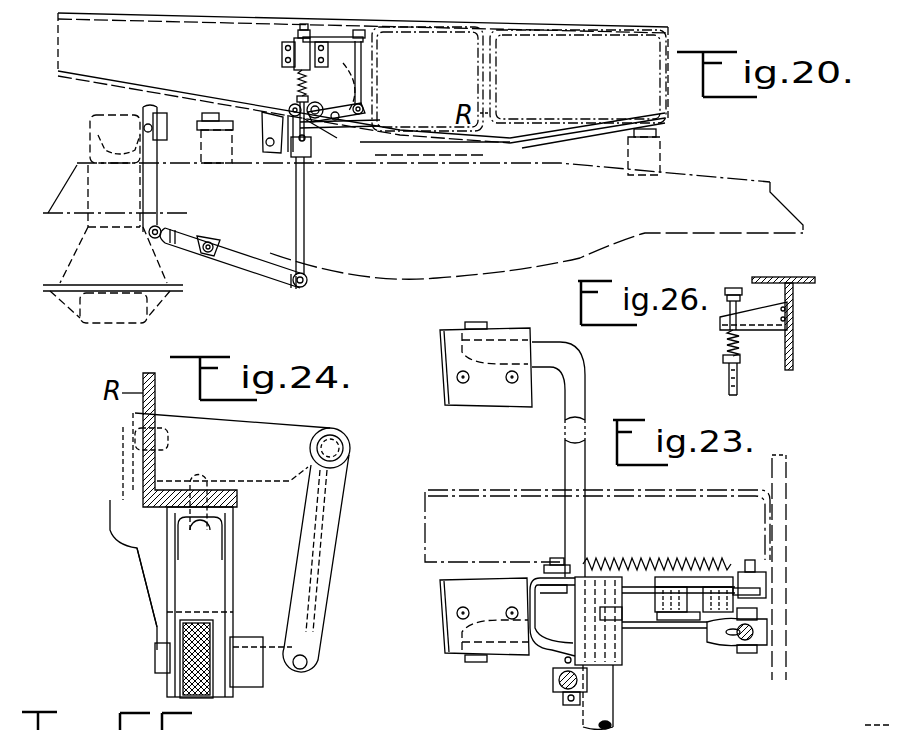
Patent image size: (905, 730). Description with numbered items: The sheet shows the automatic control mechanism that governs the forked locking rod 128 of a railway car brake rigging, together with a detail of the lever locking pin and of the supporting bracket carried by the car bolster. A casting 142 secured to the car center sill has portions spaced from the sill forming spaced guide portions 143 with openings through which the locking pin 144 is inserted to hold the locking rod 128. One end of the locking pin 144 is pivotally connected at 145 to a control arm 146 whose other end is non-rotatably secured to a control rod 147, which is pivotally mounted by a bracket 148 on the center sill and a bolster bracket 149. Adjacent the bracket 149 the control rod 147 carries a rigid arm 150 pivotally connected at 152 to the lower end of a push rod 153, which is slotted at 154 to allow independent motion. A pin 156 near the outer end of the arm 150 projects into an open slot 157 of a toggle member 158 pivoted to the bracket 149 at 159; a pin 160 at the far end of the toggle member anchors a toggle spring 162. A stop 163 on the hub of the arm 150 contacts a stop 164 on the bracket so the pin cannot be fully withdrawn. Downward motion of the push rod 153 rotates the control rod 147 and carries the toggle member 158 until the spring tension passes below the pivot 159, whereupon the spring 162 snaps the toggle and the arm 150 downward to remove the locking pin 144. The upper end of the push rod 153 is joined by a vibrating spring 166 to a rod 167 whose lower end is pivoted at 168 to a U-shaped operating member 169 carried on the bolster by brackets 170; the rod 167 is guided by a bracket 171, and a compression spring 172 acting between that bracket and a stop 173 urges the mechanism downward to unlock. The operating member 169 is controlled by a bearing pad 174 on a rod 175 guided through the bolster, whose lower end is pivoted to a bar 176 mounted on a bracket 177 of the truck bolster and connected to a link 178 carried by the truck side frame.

In FIG. 24, the forked locking rod 128 is at (183, 630).
In FIG. 24, the casting 142 is at (225, 567).
In FIG. 24, the spaced guide portions 143 is at (172, 695).
In FIG. 24, the locking pin 144 is at (270, 672).
In FIG. 24, the pivotal connection 145 is at (307, 665).
In FIG. 24, the control arm 146 is at (320, 602).
In FIG. 20, the control rod 147 is at (337, 138).
In FIG. 24, the control rod 147 is at (351, 448).
In FIG. 23, the control rod 147 is at (600, 708).
In FIG. 24, the bracket 148 is at (232, 447).
In FIG. 20, the bolster bracket 149 is at (370, 126).
In FIG. 23, the bolster bracket 149 is at (548, 628).
In FIG. 20, the arm 150 is at (320, 107).
In FIG. 23, the arm 150 is at (652, 630).
In FIG. 23, the pivotal connection 152 is at (747, 653).
In FIG. 20, the push rod 153 is at (362, 77).
In FIG. 23, the push rod 153 is at (768, 632).
In FIG. 20, the slot 154 is at (368, 112).
In FIG. 23, the pin 156 is at (700, 628).
In FIG. 23, the open slot 157 is at (720, 576).
In FIG. 20, the toggle member 158 is at (350, 78).
In FIG. 23, the toggle member 158 is at (688, 627).
In FIG. 23, the pivot 159 is at (673, 575).
In FIG. 23, the pin 160 is at (748, 560).
In FIG. 23, the toggle spring 162 is at (647, 558).
In FIG. 23, the stop 163 is at (622, 620).
In FIG. 23, the stop 164 is at (600, 614).
In FIG. 20, the vibrating spring 166 is at (333, 38).
In FIG. 26, the vibrating spring 166 is at (726, 291).
In FIG. 20, the rod 167 is at (308, 133).
In FIG. 26, the rod 167 is at (736, 384).
In FIG. 23, the rod 167 is at (557, 685).
In FIG. 23, the pivotal connection 168 is at (575, 704).
In FIG. 20, the U-shaped operating member 169 is at (292, 152).
In FIG. 23, the U-shaped operating member 169 is at (565, 473).
In FIG. 20, the brackets 170 is at (262, 152).
In FIG. 23, the brackets 170 is at (490, 400).
In FIG. 20, the bracket 171 is at (282, 58).
In FIG. 26, the bracket 171 is at (763, 322).
In FIG. 20, the compression spring 172 is at (298, 88).
In FIG. 26, the compression spring 172 is at (724, 346).
In FIG. 20, the stop 173 is at (307, 97).
In FIG. 20, the bearing pad 174 is at (306, 157).
In FIG. 20, the rod 175 is at (303, 220).
In FIG. 20, the bar 176 is at (253, 263).
In FIG. 20, the bracket 177 is at (210, 242).
In FIG. 20, the link 178 is at (156, 190).